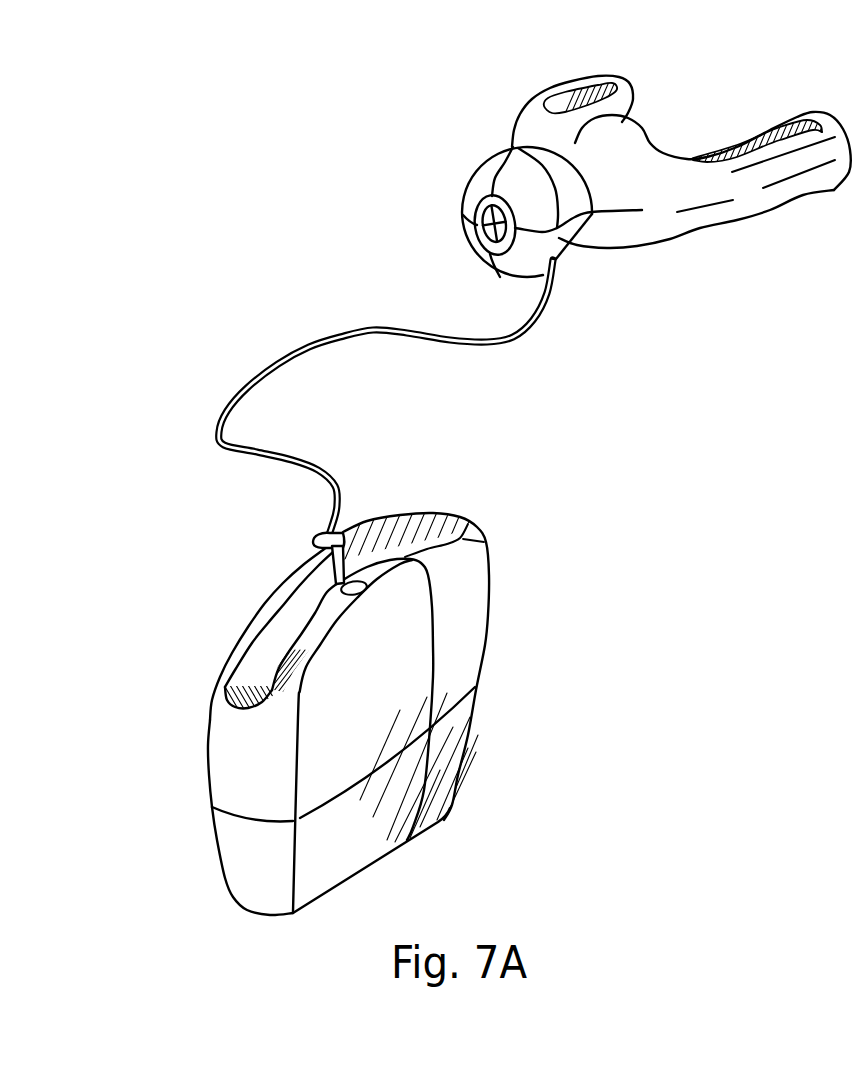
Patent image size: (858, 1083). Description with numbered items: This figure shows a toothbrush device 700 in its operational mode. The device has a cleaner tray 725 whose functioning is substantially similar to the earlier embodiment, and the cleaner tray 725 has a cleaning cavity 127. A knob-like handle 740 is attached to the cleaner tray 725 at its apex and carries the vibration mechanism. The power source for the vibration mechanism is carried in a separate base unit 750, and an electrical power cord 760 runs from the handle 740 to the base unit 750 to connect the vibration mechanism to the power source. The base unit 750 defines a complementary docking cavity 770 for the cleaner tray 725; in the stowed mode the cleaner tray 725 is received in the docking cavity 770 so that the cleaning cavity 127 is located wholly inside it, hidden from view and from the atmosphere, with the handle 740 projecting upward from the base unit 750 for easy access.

The toothbrush device 700 is at (312, 238).
The cleaning cavity 127 is at (748, 131).
The cleaner tray 725 is at (668, 222).
The handle 740 is at (551, 246).
The electrical power cord 760 is at (447, 337).
The docking cavity 770 is at (244, 635).
The base unit 750 is at (447, 753).